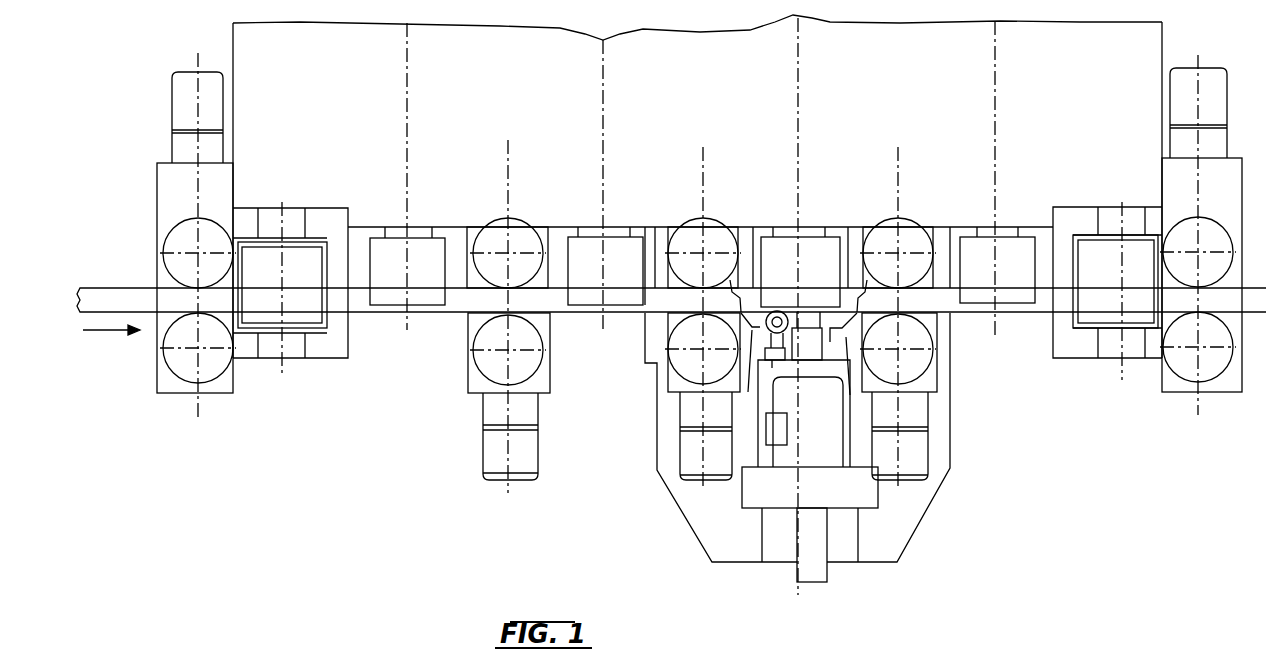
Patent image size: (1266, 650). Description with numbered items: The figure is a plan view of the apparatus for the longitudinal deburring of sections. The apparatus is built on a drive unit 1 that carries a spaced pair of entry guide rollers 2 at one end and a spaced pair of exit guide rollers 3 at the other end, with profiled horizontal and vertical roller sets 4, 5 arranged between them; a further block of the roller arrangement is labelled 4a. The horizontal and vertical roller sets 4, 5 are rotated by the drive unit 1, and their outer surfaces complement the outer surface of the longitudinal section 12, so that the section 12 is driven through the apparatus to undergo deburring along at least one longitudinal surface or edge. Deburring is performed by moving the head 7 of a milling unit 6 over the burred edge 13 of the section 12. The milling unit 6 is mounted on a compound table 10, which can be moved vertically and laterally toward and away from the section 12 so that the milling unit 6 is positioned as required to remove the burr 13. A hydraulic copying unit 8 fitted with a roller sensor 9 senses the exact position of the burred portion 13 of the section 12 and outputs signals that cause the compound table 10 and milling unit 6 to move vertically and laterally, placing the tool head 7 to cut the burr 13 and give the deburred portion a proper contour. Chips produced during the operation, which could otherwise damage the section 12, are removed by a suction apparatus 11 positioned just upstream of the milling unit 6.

The drive unit 1 is at (678, 123).
The entry guide rollers 2 is at (223, 385).
The exit guide rollers 3 is at (1230, 380).
The horizontal roller set 4 is at (425, 287).
The central roll stand block 4a is at (782, 250).
The vertical roller set 5 is at (717, 238).
The milling unit 6 is at (808, 323).
The head 7 is at (813, 322).
The hydraulic copying unit 8 is at (818, 573).
The roller sensor 9 is at (773, 335).
The compound table 10 is at (850, 447).
The suction apparatus 11 is at (740, 325).
The longitudinal section 12 is at (348, 297).
The burred edge 13 is at (378, 315).